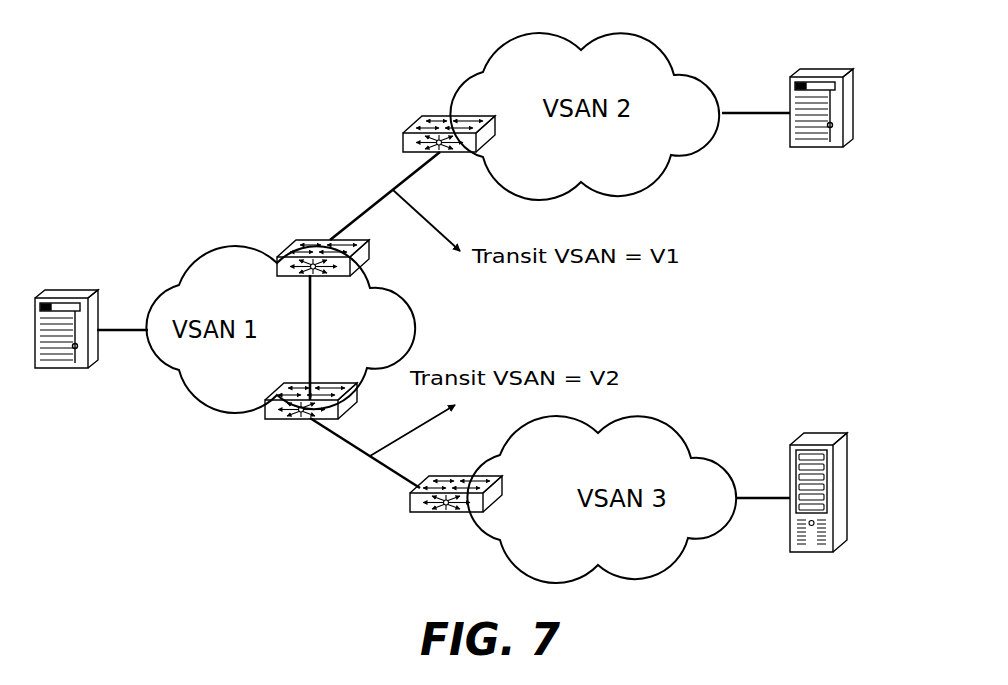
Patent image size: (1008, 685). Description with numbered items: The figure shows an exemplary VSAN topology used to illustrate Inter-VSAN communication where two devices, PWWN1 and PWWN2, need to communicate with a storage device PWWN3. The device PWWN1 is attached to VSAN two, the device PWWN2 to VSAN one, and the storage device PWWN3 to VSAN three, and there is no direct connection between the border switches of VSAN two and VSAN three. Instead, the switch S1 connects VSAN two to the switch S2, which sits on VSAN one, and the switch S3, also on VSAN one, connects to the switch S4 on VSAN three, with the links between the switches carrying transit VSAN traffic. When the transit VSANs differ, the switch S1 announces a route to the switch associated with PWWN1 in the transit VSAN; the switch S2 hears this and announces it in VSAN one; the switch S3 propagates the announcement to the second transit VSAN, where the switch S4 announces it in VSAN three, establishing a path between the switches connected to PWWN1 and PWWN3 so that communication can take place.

The switch S1 is at (449, 122).
The switch S2 is at (323, 244).
The switch S3 is at (313, 387).
The switch S4 is at (456, 481).
The device PWWN1 is at (821, 91).
The device PWWN2 is at (63, 356).
The storage device PWWN3 is at (821, 474).